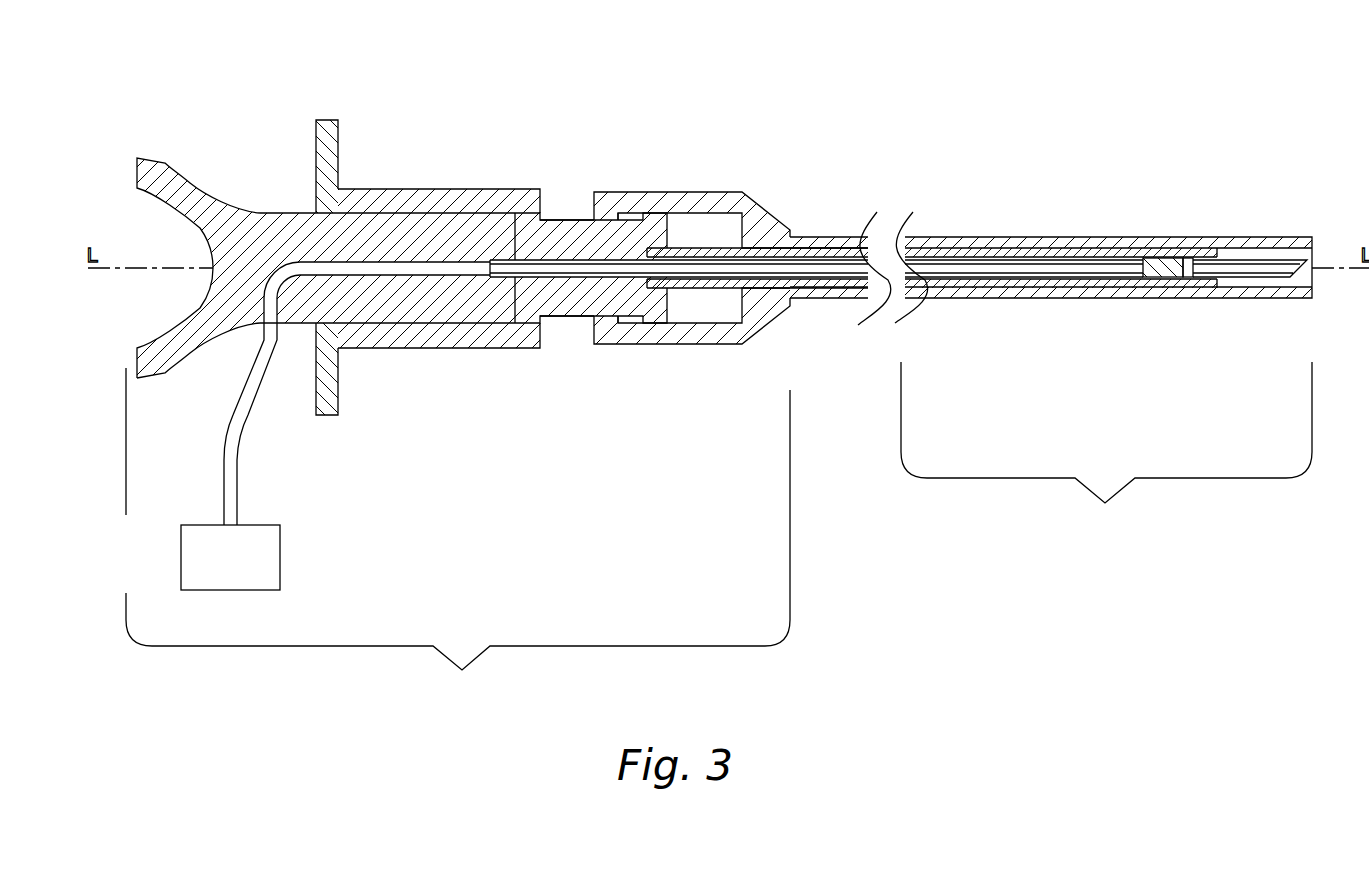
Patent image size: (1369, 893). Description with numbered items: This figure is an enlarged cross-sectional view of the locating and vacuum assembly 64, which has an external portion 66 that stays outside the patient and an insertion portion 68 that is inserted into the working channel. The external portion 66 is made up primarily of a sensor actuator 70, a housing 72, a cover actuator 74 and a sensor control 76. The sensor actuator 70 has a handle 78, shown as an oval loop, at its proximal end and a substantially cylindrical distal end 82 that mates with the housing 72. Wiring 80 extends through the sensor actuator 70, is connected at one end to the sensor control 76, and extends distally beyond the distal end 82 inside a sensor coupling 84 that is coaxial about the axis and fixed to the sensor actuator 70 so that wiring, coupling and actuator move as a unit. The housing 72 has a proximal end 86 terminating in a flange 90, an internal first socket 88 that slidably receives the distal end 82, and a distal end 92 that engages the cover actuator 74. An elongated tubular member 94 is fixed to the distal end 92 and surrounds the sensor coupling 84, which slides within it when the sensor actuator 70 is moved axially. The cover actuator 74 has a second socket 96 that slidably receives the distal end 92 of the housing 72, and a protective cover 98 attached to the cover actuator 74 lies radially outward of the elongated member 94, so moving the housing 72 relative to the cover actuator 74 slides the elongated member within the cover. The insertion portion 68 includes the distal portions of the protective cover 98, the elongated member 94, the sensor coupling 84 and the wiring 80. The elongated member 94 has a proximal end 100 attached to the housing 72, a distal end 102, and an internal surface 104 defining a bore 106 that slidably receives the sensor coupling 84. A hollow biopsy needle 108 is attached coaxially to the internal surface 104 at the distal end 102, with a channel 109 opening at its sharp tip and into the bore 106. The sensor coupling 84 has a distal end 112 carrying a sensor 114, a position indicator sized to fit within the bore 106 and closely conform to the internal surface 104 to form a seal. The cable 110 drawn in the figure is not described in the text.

The locating and vacuum assembly 64 is at (662, 104).
The external portion 66 is at (458, 535).
The insertion portion 68 is at (1106, 450).
The sensor actuator 70 is at (262, 205).
The housing 72 is at (415, 190).
The cover actuator 74 is at (720, 191).
The sensor control 76 is at (181, 550).
The handle 78 is at (183, 325).
The wiring 80 is at (228, 441).
The distal end 82 is at (478, 228).
The sensor coupling 84 is at (512, 232).
The proximal end 86 is at (362, 192).
The first socket 88 is at (412, 318).
The flange 90 is at (331, 120).
The distal end 92 is at (618, 233).
The elongated tubular member 94 is at (728, 290).
The second socket 96 is at (698, 316).
The protective cover 98 is at (827, 237).
The proximal end 100 is at (693, 237).
The distal end 102 is at (1203, 252).
The internal surface 104 is at (1093, 272).
The bore 106 is at (1180, 258).
The biopsy needle 108 is at (1240, 290).
The channel 109 is at (1273, 260).
The fiber cable 110 is at (507, 260).
The distal end 112 is at (1132, 280).
The sensor 114 is at (1162, 277).